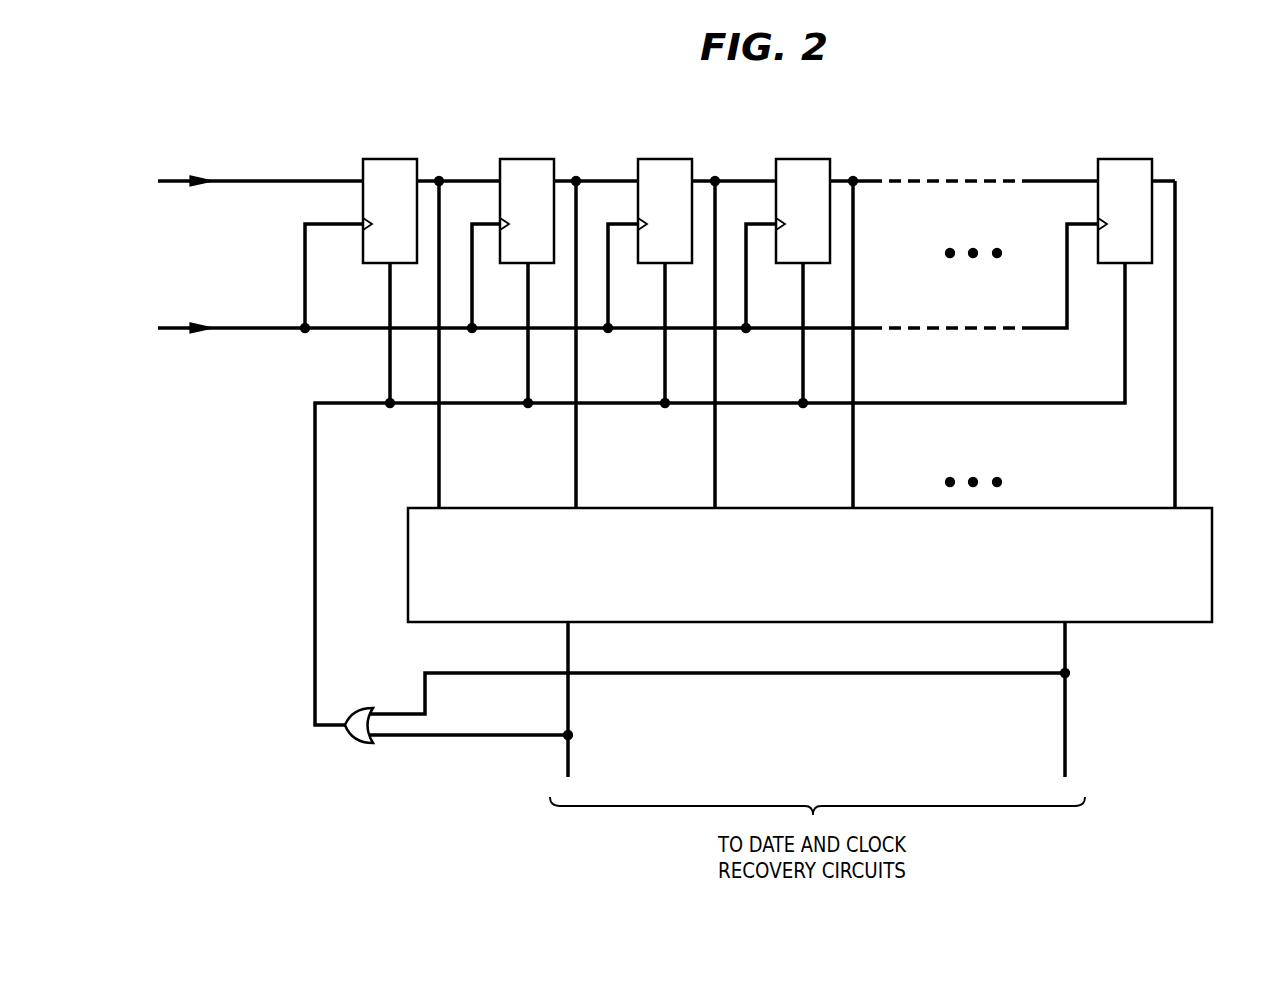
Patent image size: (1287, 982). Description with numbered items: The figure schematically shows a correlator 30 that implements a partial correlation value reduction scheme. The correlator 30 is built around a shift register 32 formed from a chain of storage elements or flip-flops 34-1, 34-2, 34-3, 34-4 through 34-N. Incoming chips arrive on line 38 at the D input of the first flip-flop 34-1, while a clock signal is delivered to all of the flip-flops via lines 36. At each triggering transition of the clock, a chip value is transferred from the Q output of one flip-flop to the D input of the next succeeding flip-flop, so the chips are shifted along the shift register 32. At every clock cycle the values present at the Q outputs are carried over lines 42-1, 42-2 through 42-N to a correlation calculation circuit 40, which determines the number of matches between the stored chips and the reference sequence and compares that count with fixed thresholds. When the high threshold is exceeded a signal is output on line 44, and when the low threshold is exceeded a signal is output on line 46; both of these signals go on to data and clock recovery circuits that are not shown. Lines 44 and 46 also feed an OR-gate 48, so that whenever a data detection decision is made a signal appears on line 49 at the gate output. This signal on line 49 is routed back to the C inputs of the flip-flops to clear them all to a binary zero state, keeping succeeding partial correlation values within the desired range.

The correlator 30 is at (999, 111).
The shift register 32 is at (430, 94).
The flip-flop 34-1 is at (412, 159).
The flip-flop 34-2 is at (549, 159).
The flip-flop 34-3 is at (687, 159).
The flip-flop 34-4 is at (825, 159).
The flip-flop 34-N is at (1147, 159).
The clock lines 36 is at (253, 327).
The chip input line 38 is at (277, 180).
The correlation calculation circuit 40 is at (1212, 527).
The line 42-1 is at (439, 493).
The line 42-2 is at (576, 493).
The line 42-N is at (1175, 493).
The high threshold output line 44 is at (568, 771).
The low threshold output line 46 is at (1065, 762).
The OR-gate 48 is at (366, 744).
The output line of the OR-gate 49 is at (315, 482).